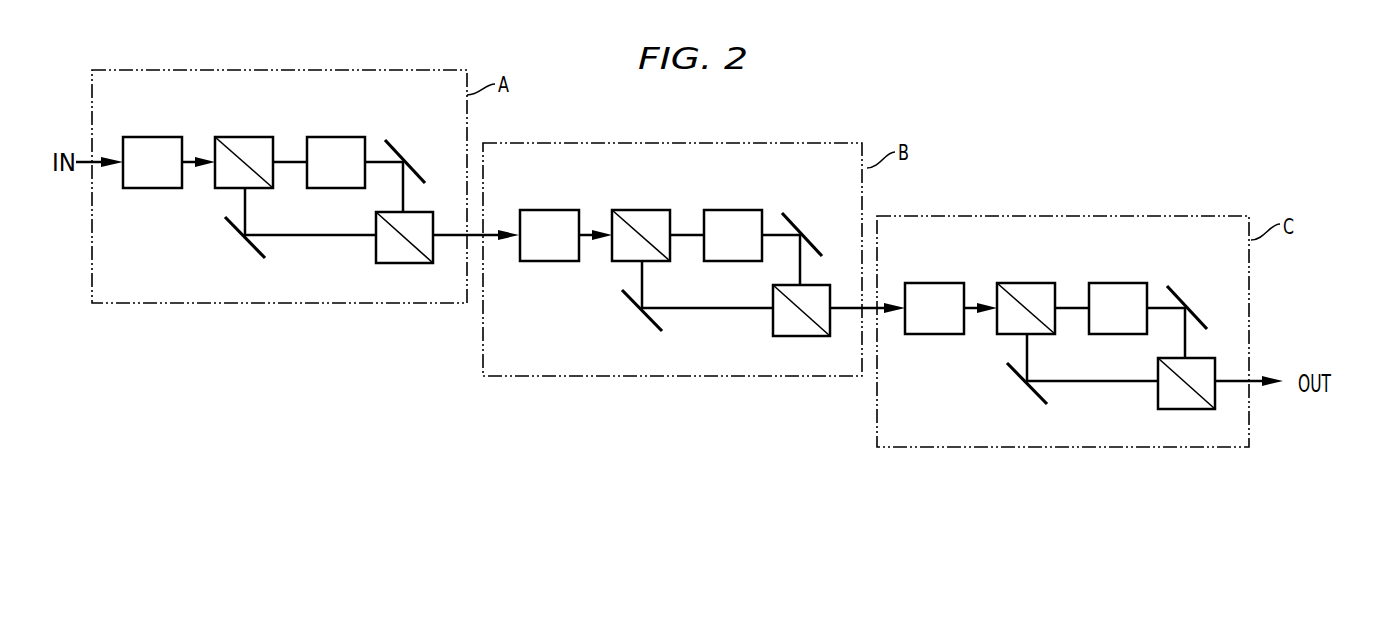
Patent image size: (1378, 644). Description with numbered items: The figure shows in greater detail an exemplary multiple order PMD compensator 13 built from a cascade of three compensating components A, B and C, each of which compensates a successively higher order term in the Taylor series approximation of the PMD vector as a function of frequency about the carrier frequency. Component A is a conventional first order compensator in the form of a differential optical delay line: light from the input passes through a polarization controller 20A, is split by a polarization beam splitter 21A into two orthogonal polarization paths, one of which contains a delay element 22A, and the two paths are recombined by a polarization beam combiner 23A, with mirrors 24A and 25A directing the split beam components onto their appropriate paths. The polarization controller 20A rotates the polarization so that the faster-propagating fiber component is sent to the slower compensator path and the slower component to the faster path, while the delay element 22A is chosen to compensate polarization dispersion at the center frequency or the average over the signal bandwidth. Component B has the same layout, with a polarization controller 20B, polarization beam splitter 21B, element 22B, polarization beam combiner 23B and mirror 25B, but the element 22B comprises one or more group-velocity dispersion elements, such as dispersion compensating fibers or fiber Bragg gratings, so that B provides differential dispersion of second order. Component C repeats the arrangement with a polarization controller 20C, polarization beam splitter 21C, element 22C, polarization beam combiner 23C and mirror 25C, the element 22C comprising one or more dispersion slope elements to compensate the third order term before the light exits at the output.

The multiple order PMD compensator 13 is at (1024, 111).
The polarization controller 20A is at (157, 137).
The polarization beam splitter 21A is at (248, 137).
The delay element 22A is at (340, 137).
The polarization beam combiner 23A is at (376, 250).
The mirror 24A is at (402, 154).
The mirror 25A is at (247, 244).
The polarization controller 20B is at (549, 211).
The polarization beam splitter 21B is at (641, 211).
The group-velocity dispersion element 22B is at (733, 211).
The polarization beam combiner 23B is at (773, 324).
The mirror 25B is at (627, 325).
The polarization controller 20C is at (934, 284).
The polarization beam splitter 21C is at (1026, 284).
The dispersion slope element 22C is at (1118, 284).
The polarization beam combiner 23C is at (1158, 397).
The mirror 25C is at (1012, 398).